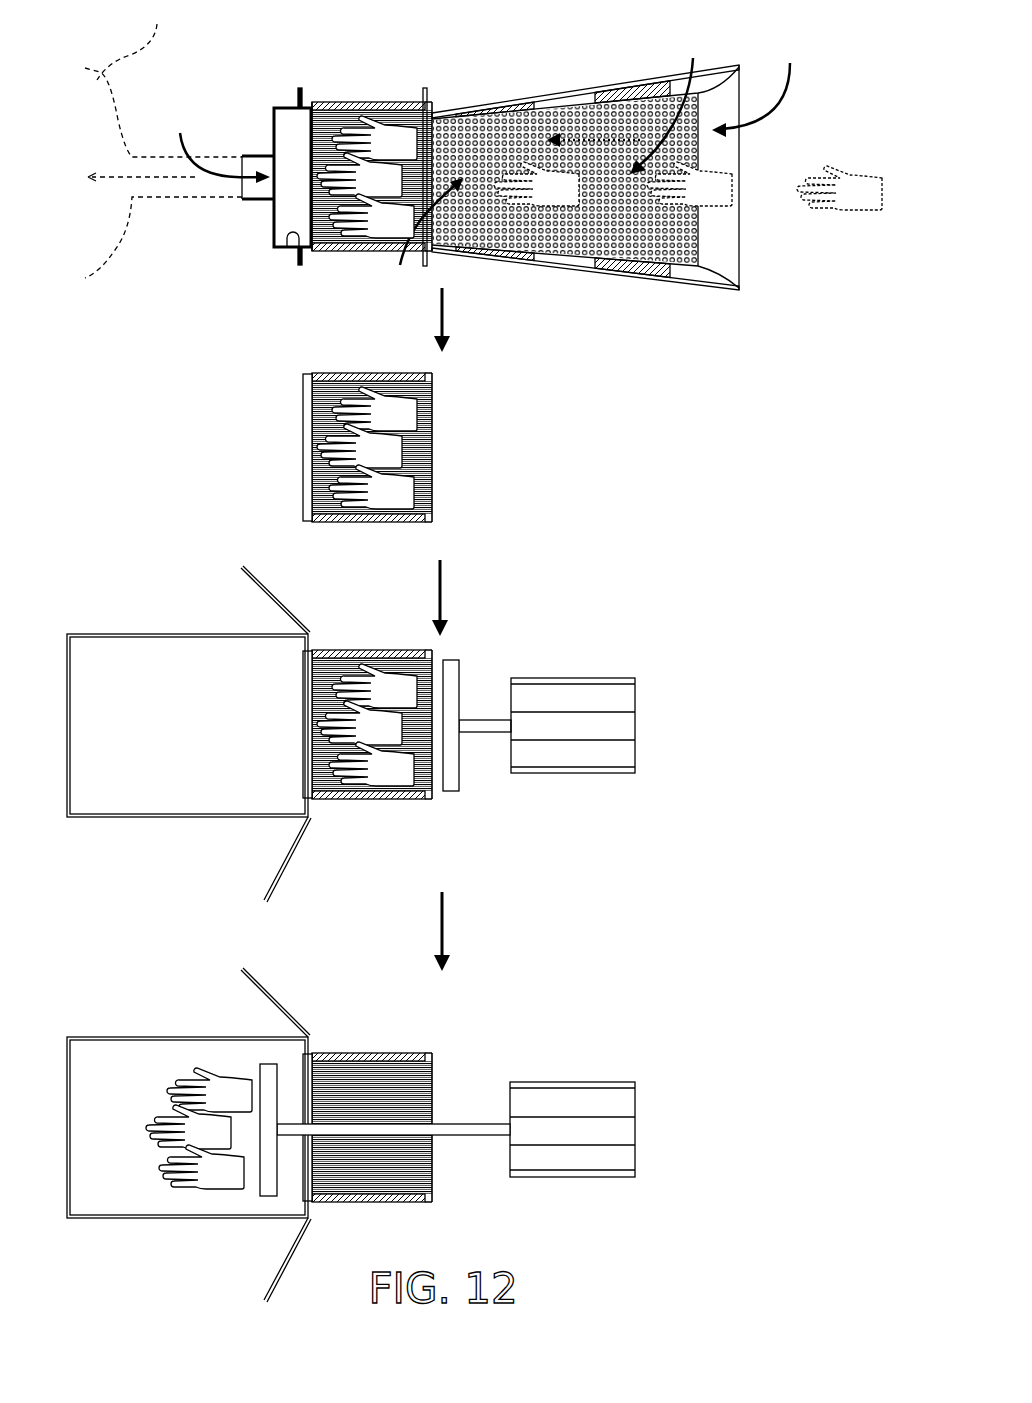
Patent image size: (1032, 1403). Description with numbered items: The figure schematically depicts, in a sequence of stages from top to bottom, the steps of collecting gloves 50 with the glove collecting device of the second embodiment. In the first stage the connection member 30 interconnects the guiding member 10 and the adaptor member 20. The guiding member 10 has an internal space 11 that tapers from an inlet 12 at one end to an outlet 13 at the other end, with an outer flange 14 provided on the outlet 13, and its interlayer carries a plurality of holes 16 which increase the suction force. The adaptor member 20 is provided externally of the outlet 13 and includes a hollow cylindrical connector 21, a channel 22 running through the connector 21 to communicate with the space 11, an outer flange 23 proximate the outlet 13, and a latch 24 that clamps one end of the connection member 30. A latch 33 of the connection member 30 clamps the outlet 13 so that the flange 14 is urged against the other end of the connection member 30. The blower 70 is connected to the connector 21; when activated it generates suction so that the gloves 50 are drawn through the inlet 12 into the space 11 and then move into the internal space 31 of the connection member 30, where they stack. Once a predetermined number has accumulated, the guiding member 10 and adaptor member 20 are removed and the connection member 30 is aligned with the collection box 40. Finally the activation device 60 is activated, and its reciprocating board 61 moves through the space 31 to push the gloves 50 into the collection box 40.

The guiding member 10 is at (513, 90).
The internal space 11 is at (669, 102).
The inlet 12 is at (758, 87).
The outlet 13 is at (422, 240).
The outer flange 14 is at (428, 106).
The holes 16 is at (594, 130).
The adaptor member 20 is at (272, 118).
The connector 21 is at (255, 155).
The channel 22 is at (217, 144).
The outer flange 23 is at (296, 100).
The latch 24 is at (292, 240).
The connection member 30 is at (375, 103).
The internal space 31 is at (343, 117).
The latch 33 is at (440, 112).
The collection box 40 is at (188, 633).
The gloves 50 is at (388, 135).
The activation device 60 is at (565, 693).
The reciprocating board 61 is at (453, 673).
The blower 70 is at (163, 139).